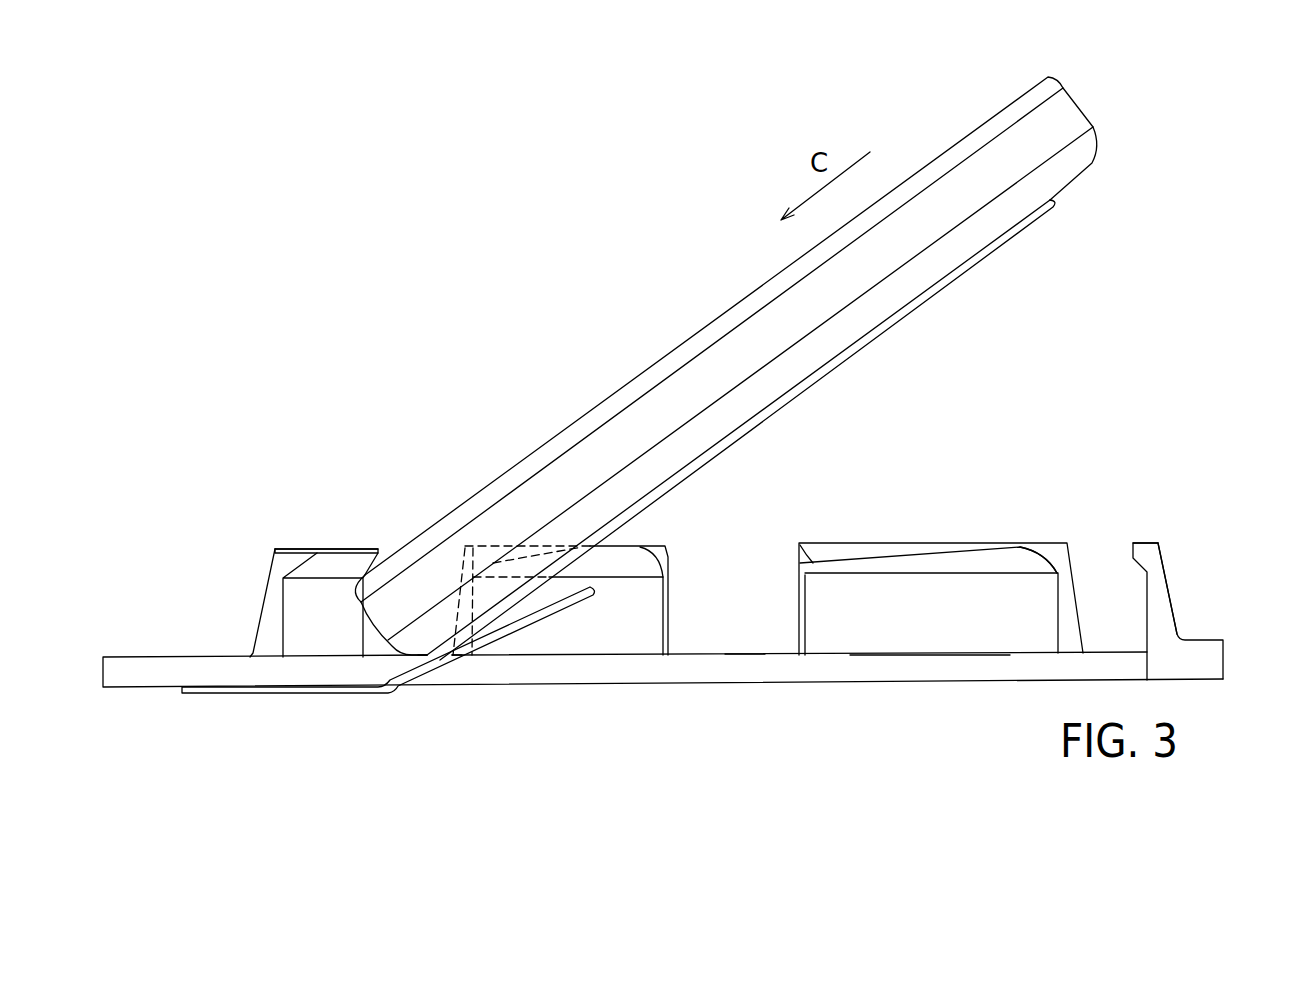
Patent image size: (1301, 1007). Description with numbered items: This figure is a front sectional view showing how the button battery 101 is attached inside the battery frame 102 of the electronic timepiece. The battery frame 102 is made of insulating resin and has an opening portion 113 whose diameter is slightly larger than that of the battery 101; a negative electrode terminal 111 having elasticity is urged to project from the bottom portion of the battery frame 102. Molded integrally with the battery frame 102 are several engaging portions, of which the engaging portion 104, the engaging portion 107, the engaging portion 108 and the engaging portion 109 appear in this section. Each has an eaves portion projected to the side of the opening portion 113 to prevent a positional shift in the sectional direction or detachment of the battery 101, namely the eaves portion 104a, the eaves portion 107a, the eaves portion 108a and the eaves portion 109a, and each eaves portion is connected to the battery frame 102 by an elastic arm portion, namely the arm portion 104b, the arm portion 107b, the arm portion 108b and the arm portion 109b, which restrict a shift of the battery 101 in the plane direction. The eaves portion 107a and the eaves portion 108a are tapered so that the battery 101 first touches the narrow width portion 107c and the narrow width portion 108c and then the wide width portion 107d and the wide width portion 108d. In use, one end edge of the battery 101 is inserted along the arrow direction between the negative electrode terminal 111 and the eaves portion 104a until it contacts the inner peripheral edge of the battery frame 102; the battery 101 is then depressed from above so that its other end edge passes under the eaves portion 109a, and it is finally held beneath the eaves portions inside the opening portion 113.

The button battery 101 is at (948, 147).
The battery frame 102 is at (757, 668).
The engaging portion 104 is at (249, 540).
The eaves portion 104a is at (330, 548).
The arm portion 104b is at (263, 602).
The engaging portion 107 is at (580, 519).
The eaves portion 107a is at (563, 557).
The arm portion 107b is at (578, 622).
The narrow width portion 107c is at (488, 551).
The wide width portion 107d is at (645, 568).
The engaging portion 108 is at (954, 523).
The eaves portion 108a is at (917, 565).
The arm portion 108b is at (928, 618).
The narrow width portion 108c is at (813, 563).
The wide width portion 108d is at (1028, 563).
The engaging portion 109 is at (1174, 541).
The eaves portion 109a is at (1145, 540).
The arm portion 109b is at (1172, 601).
The negative electrode terminal 111 is at (438, 662).
The opening portion 113 is at (737, 632).